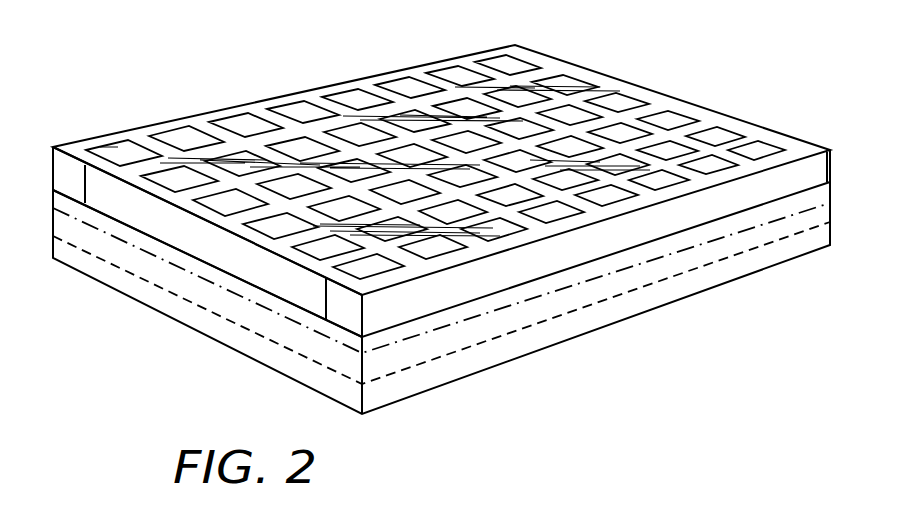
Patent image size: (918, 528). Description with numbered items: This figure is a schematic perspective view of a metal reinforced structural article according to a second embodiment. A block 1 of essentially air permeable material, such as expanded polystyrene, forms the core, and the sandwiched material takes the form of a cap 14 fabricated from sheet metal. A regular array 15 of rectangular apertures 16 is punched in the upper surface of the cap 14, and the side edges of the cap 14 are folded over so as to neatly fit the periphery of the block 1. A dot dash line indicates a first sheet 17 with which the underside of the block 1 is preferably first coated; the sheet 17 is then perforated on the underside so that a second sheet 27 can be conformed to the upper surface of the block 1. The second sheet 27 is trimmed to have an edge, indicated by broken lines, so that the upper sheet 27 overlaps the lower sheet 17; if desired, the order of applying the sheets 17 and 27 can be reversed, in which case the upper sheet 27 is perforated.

The block 1 is at (737, 222).
The cap 14 is at (120, 197).
The regular array 15 is at (588, 79).
The rectangular apertures 16 is at (722, 132).
The first sheet 17 is at (175, 272).
The second sheet 27 is at (203, 308).